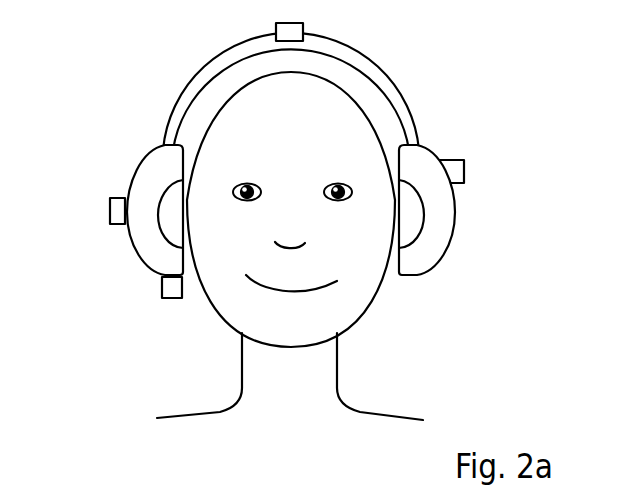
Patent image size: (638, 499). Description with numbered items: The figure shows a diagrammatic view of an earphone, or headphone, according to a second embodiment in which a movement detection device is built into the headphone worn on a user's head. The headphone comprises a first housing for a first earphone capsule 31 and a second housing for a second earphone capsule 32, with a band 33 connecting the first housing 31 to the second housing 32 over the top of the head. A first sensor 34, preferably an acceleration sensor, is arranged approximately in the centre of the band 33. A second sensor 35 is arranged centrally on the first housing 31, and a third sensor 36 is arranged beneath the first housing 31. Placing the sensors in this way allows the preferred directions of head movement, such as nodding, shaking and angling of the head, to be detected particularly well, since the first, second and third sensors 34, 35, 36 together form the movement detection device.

The first earphone capsule housing 31 is at (147, 268).
The second earphone capsule housing 32 is at (430, 255).
The band 33 is at (379, 69).
The first sensor 34 is at (296, 30).
The second sensor 35 is at (110, 213).
The third sensor 36 is at (172, 298).